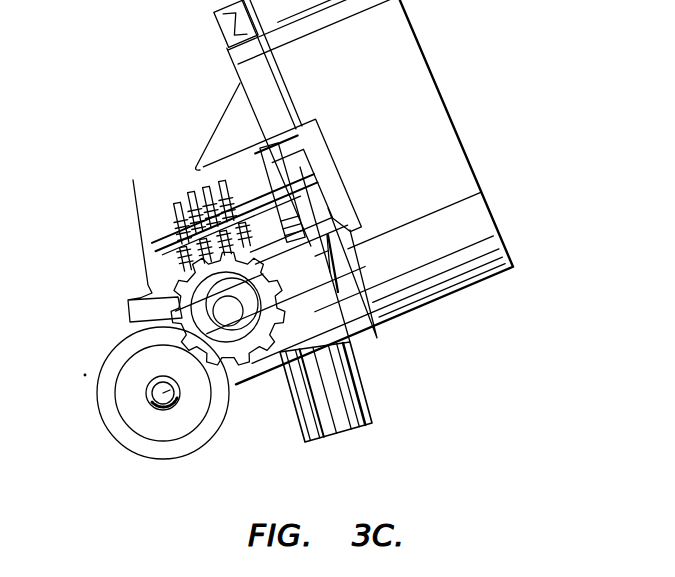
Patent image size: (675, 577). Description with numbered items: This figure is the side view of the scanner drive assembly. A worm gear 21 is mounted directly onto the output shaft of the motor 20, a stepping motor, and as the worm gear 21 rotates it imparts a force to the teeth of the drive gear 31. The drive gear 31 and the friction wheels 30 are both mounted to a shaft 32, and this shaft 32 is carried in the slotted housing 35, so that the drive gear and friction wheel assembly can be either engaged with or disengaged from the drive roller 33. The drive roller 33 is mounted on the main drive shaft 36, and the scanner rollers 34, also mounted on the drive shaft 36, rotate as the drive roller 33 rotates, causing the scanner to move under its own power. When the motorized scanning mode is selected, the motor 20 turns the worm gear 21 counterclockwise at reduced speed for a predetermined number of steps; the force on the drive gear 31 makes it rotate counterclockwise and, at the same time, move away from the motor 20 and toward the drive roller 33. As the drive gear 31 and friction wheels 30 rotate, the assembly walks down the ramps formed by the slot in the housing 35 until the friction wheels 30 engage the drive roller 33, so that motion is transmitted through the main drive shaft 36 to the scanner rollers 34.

The motor 20 is at (425, 126).
The worm gear 21 is at (185, 205).
The friction wheels 30 is at (290, 279).
The drive gear 31 is at (177, 282).
The shaft 32 is at (228, 311).
The drive roller 33 is at (163, 427).
The scanner rollers 34 is at (108, 428).
The slotted housing 35 is at (375, 340).
The main drive shaft 36 is at (168, 388).